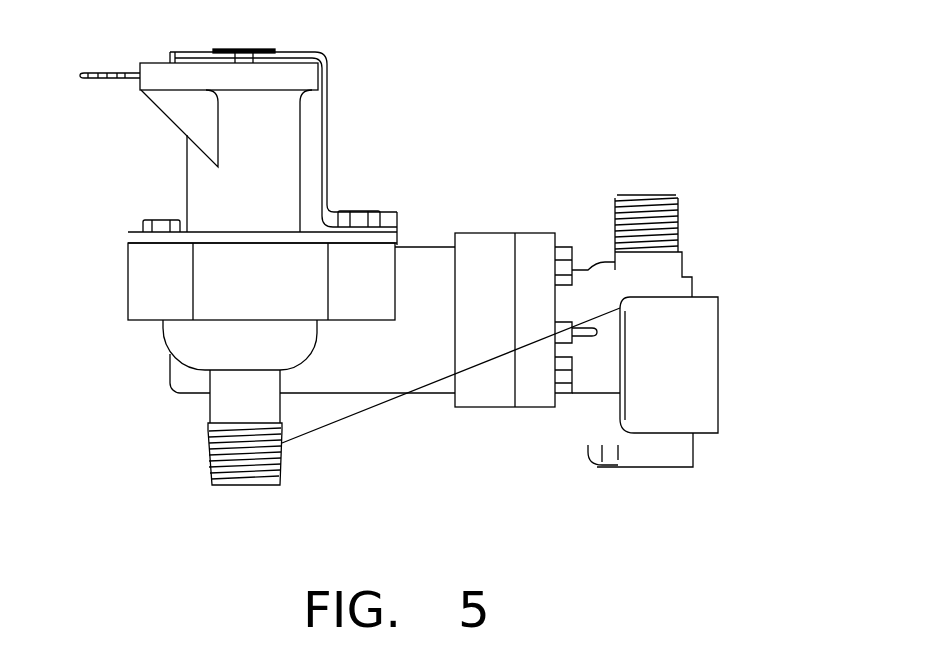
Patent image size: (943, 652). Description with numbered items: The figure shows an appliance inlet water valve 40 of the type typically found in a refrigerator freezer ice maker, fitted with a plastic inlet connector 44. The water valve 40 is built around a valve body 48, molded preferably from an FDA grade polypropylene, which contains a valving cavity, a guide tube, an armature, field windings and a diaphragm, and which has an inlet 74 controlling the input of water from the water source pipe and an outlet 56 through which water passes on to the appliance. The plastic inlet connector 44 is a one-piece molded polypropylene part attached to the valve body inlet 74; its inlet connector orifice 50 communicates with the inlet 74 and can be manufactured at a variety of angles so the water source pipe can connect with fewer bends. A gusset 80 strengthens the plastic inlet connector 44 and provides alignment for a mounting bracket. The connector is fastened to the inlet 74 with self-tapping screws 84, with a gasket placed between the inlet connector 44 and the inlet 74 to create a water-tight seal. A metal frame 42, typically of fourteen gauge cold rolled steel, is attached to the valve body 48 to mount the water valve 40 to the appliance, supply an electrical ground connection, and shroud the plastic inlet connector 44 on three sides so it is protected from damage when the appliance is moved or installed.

The appliance water valve 40 is at (483, 102).
The metal frame 42 is at (718, 335).
The plastic inlet connector 44 is at (683, 255).
The valve body 48 is at (422, 272).
The inlet connector orifice 50 is at (648, 195).
The outlet 56 is at (240, 487).
The inlet 74 is at (490, 407).
The gusset 80 is at (586, 337).
The self-tapping screws 84 is at (570, 258).